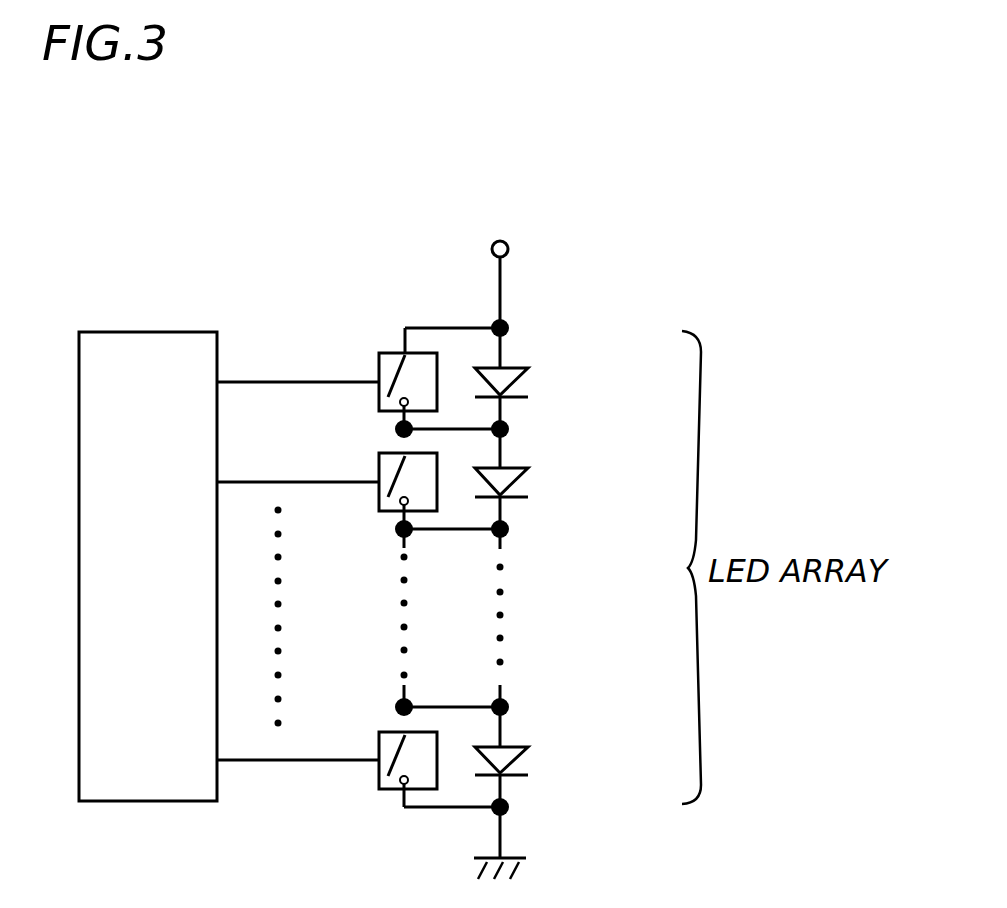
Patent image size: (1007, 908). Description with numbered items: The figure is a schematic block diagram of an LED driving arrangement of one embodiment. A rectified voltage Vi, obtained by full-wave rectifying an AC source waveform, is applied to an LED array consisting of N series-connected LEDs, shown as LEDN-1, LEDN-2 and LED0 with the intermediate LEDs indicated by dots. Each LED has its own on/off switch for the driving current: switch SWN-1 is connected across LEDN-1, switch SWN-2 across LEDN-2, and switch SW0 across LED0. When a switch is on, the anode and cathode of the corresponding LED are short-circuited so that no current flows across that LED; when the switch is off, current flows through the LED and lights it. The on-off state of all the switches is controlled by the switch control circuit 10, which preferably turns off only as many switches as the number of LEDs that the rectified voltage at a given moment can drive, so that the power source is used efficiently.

The switch control circuit 10 is at (157, 331).
The rectified voltage Vi is at (667, 261).
The switch SWN-1 is at (388, 352).
The switch SWN-2 is at (388, 513).
The switch SW0 is at (378, 778).
The LED LEDN-1 is at (528, 380).
The LED LEDN-2 is at (528, 482).
The LED LED0 is at (528, 762).